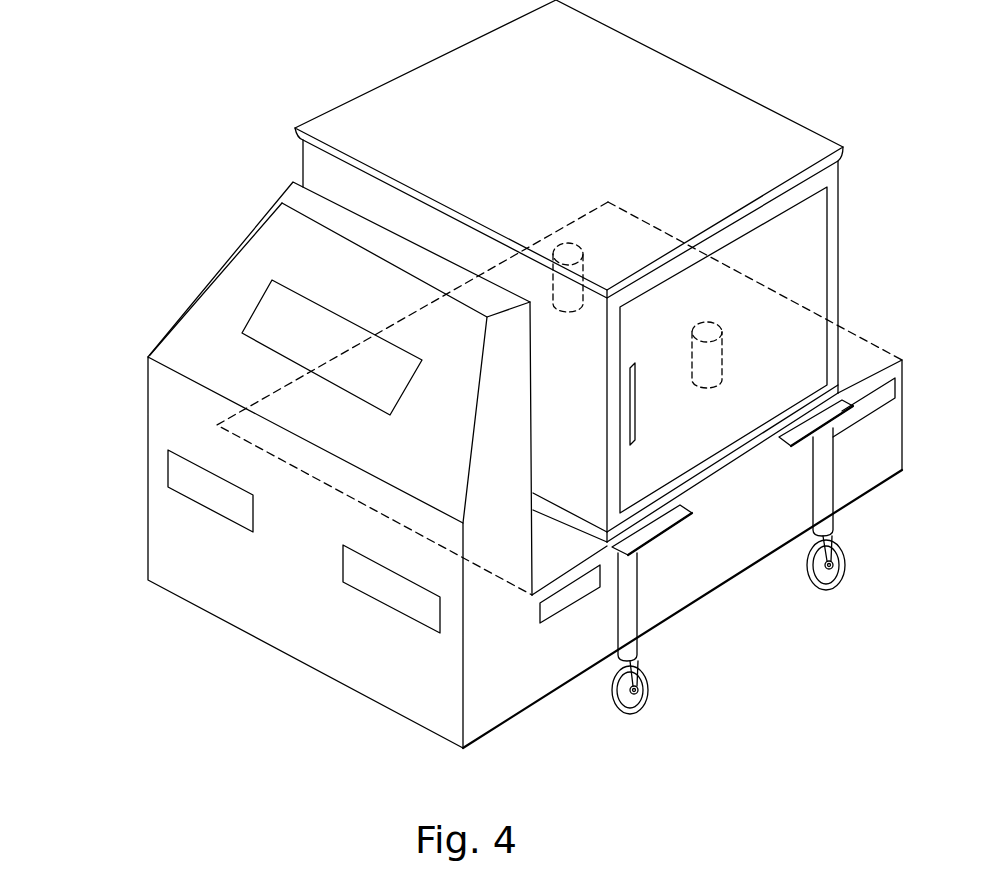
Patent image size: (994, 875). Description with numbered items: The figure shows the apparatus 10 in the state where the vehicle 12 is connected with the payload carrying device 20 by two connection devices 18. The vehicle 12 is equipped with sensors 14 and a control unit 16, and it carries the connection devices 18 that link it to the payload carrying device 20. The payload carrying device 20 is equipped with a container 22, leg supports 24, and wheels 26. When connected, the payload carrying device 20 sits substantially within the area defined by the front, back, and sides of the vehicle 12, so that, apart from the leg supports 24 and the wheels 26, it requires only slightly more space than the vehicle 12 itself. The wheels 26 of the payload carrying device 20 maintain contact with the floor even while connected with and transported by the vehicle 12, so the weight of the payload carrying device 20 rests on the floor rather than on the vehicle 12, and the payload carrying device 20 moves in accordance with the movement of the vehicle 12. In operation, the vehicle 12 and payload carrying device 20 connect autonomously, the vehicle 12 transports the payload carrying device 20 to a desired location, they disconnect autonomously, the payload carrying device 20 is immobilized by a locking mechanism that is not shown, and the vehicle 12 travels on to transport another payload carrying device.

The apparatus 10 is at (124, 342).
The vehicle 12 is at (278, 592).
The sensors 14 is at (215, 500).
The control unit 16 is at (290, 345).
The connection device 18 is at (583, 250).
The payload carrying device 20 is at (574, 271).
The container 22 is at (560, 135).
The leg supports 24 is at (817, 477).
The wheels 26 is at (807, 572).